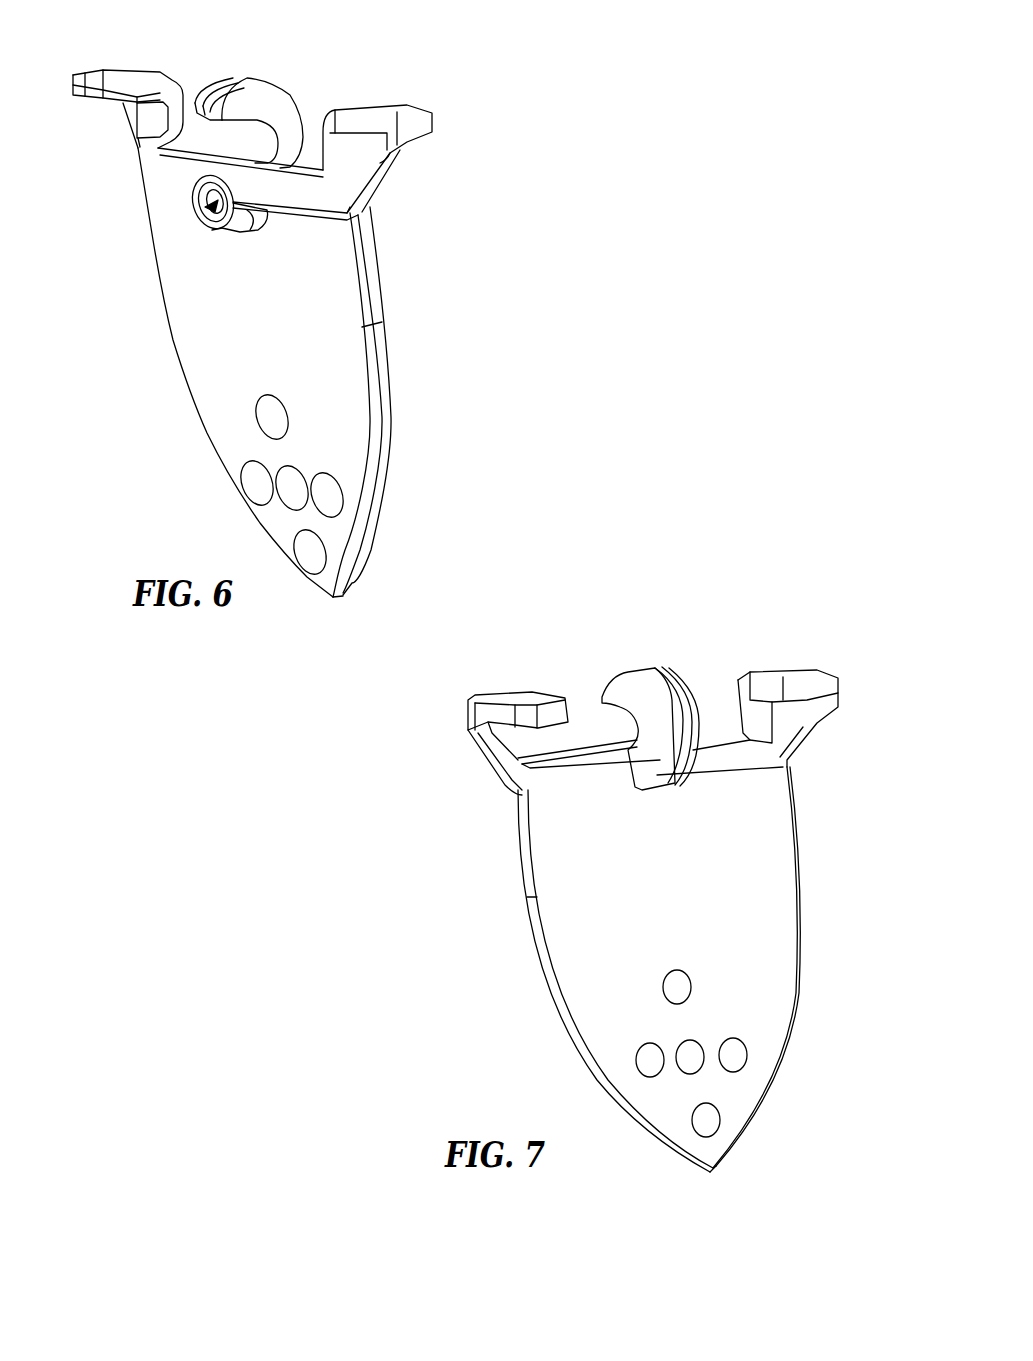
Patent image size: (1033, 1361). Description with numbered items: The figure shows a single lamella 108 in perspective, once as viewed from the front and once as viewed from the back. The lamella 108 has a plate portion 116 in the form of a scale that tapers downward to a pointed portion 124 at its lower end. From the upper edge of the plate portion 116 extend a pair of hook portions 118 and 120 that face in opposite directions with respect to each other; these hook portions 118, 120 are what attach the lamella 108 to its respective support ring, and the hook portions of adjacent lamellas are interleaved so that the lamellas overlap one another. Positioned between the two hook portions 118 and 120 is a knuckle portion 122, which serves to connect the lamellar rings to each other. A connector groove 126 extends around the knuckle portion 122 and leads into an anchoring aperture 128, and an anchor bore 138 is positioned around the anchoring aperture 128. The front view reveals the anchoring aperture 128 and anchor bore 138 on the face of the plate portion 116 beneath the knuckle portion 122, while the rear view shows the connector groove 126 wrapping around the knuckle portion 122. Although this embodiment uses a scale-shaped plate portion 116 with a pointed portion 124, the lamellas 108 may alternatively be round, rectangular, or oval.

In FIG. 6, the lamella 108 is at (443, 283).
In FIG. 7, the lamella 108 is at (690, 560).
In FIG. 6, the plate portion 116 is at (343, 420).
In FIG. 7, the plate portion 116 is at (762, 895).
In FIG. 6, the hook portion 118 is at (400, 110).
In FIG. 7, the hook portion 118 is at (505, 697).
In FIG. 6, the hook portion 120 is at (92, 105).
In FIG. 7, the hook portion 120 is at (767, 670).
In FIG. 6, the knuckle portion 122 is at (280, 110).
In FIG. 7, the knuckle portion 122 is at (623, 690).
In FIG. 6, the pointed portion 124 is at (336, 606).
In FIG. 7, the pointed portion 124 is at (715, 1172).
In FIG. 6, the connector groove 126 is at (205, 85).
In FIG. 7, the connector groove 126 is at (657, 672).
In FIG. 6, the anchoring aperture 128 is at (193, 210).
In FIG. 6, the anchor bore 138 is at (212, 230).